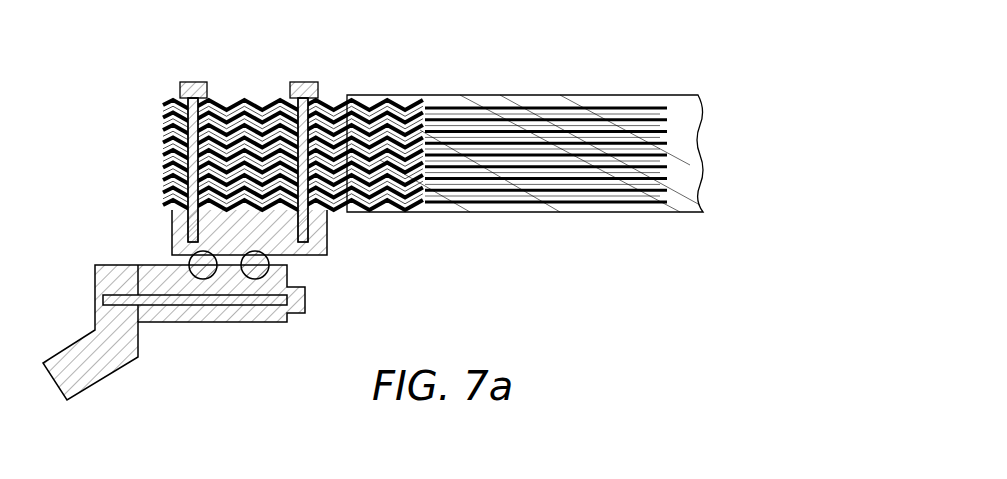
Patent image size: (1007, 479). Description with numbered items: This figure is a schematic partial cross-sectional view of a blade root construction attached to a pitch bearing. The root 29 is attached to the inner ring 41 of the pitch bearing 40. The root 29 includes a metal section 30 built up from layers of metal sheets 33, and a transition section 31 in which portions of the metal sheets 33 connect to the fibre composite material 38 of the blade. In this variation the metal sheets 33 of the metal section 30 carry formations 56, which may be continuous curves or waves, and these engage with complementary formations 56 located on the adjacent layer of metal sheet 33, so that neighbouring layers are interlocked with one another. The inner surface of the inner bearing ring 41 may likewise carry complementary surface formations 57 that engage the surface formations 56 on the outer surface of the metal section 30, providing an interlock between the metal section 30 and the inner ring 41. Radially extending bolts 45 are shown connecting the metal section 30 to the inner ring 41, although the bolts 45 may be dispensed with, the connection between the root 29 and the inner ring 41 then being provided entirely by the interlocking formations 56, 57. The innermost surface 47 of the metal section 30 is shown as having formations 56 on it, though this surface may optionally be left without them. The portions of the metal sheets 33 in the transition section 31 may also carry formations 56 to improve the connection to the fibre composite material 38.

The root 29 is at (134, 72).
The metal section 30 is at (425, 42).
The transition section 31 is at (420, 226).
The metal sheets 33 is at (165, 128).
The fibre composite material 38 is at (672, 100).
The pitch bearing 40 is at (270, 333).
The inner ring 41 is at (172, 240).
The bolts 45 is at (167, 183).
The innermost surface 47 is at (246, 100).
The formations 56 is at (383, 100).
The complementary surface formations 57 is at (263, 218).